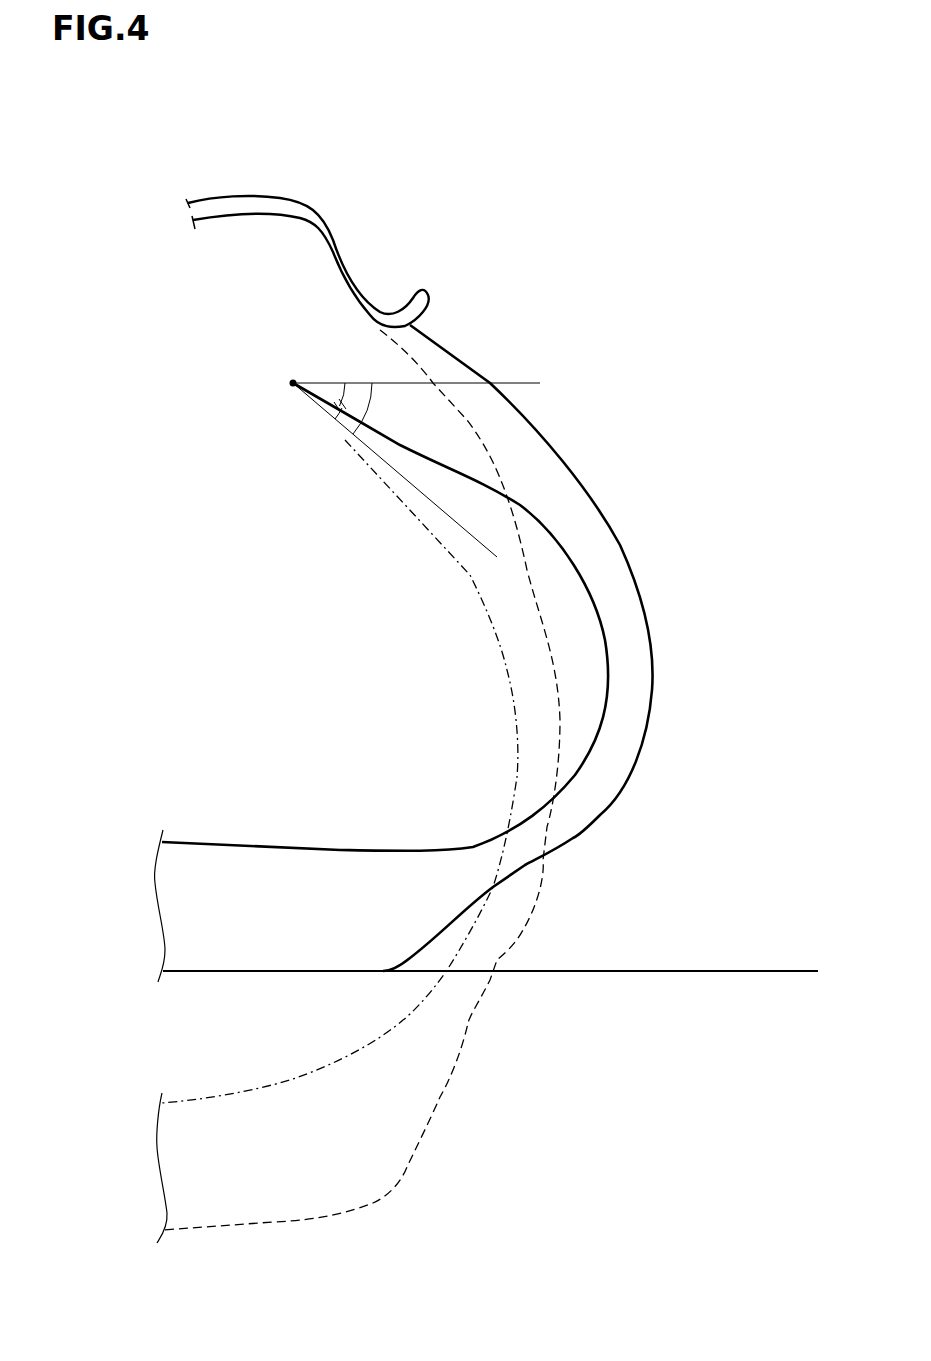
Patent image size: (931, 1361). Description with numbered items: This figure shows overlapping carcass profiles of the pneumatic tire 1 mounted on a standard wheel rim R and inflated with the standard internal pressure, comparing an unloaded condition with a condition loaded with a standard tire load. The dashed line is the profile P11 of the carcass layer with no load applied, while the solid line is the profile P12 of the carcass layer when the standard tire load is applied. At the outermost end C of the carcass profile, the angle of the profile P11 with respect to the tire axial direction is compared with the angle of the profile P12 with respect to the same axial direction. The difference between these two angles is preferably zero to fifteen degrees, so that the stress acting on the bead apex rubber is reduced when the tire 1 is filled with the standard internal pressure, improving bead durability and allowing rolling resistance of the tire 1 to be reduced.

The pneumatic tire 1 is at (640, 878).
The standard wheel rim R is at (330, 230).
The outermost end C is at (293, 383).
The profile P11 is at (498, 637).
The profile P12 is at (580, 563).